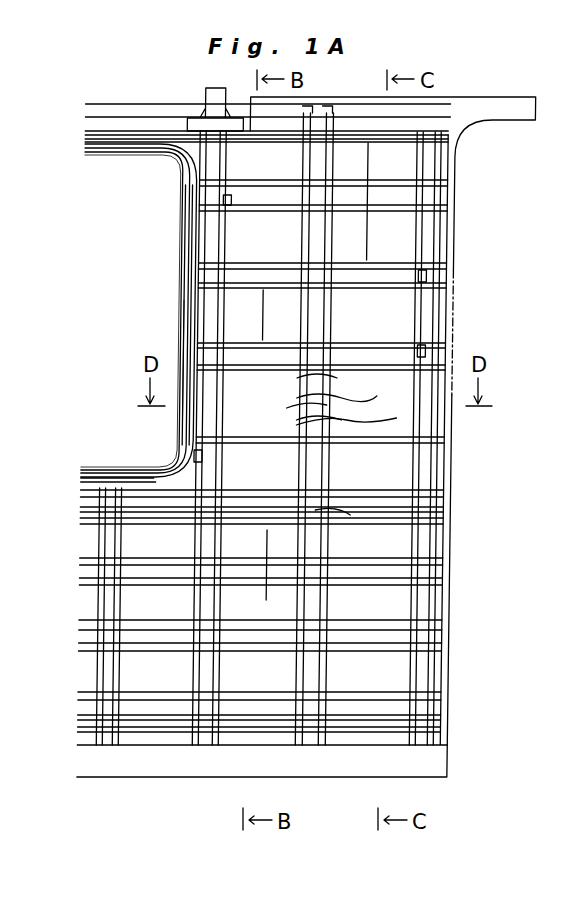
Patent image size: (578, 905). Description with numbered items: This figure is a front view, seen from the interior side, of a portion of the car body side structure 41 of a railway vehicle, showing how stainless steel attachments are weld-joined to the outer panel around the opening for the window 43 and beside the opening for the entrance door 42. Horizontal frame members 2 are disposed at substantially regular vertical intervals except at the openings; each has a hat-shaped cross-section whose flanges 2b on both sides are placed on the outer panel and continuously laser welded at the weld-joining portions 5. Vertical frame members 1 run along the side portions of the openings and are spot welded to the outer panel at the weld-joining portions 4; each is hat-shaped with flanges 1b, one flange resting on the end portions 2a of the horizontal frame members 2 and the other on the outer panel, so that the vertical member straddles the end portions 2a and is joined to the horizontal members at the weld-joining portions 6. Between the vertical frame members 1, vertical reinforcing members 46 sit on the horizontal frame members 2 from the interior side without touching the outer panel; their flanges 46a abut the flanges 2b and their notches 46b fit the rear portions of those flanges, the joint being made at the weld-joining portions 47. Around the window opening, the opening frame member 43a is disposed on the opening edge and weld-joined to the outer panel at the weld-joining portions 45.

The vertical frame member 1 is at (213, 302).
The flange 1b is at (226, 170).
The horizontal frame member 2 is at (353, 352).
The end portion 2a is at (210, 278).
The flange 2b is at (300, 196).
The weld-joining portion 4 is at (188, 234).
The weld-joining portion 5 is at (368, 150).
The weld-joining portion 6 is at (229, 205).
The car body side structure 41 is at (480, 86).
The entrance door 42 is at (290, 456).
The window 43 is at (129, 311).
The opening frame member 43a is at (190, 405).
The weld-joining portion 45 is at (142, 152).
The vertical reinforcing member 46 is at (330, 400).
The flange 46a is at (325, 399).
The notch 46b is at (330, 570).
The weld-joining portion 47 is at (300, 376).